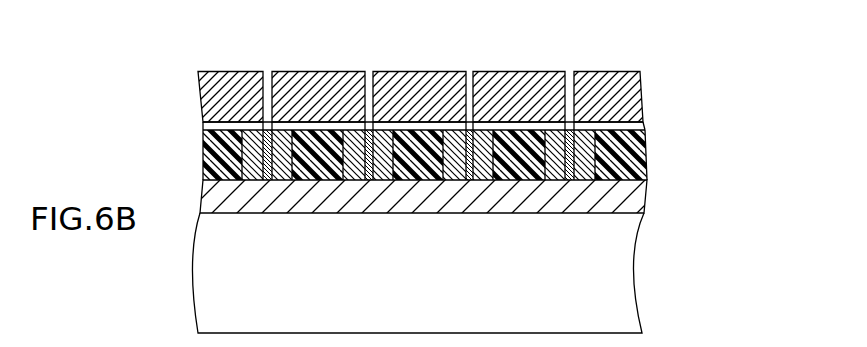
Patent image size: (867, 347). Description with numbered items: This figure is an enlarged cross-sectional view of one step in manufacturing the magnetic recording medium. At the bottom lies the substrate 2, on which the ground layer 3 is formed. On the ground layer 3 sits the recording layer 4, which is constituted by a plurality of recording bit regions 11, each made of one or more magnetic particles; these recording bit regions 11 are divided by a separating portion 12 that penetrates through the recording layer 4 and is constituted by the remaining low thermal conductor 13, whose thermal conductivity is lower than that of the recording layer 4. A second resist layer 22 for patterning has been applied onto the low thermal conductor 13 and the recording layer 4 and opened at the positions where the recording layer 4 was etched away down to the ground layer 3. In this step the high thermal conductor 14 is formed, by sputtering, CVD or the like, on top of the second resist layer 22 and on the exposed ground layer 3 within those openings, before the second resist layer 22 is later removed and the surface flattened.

The substrate 2 is at (625, 273).
The ground layer 3 is at (632, 195).
The recording bit region 11 is at (587, 135).
The recording layer 4 is at (438, 104).
The separating portion 12 is at (492, 155).
The low thermal conductor 13 is at (635, 155).
The high thermal conductor 14 is at (568, 137).
The second resist layer 22 is at (632, 127).